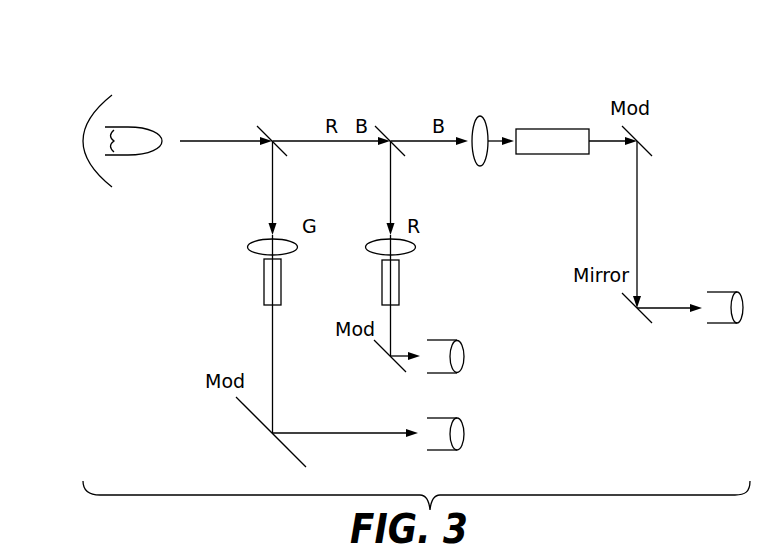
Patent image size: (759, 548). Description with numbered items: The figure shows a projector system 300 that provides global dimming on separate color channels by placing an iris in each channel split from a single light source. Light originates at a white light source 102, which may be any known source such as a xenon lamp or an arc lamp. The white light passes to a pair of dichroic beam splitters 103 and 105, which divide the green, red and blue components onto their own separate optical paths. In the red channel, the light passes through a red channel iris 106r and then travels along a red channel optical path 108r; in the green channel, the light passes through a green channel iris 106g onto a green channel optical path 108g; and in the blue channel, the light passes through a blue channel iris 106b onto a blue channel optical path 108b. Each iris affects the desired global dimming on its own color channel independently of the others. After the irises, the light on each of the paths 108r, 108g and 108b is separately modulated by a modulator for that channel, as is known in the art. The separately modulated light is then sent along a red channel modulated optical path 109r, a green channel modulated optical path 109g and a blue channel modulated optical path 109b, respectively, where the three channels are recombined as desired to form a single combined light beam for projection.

The projector system 300 is at (423, 51).
The white light source 102 is at (97, 96).
The dichroic beam splitter 103 is at (260, 132).
The dichroic beam splitter 105 is at (385, 131).
The blue channel iris 106b is at (480, 163).
The blue channel optical path 108b is at (543, 128).
The green channel iris 106g is at (249, 243).
The green channel optical path 108g is at (264, 290).
The red channel iris 106r is at (413, 250).
The red channel optical path 108r is at (399, 287).
The blue channel modulated optical path 109b is at (743, 322).
The green channel modulated optical path 109g is at (465, 433).
The red channel modulated optical path 109r is at (465, 357).